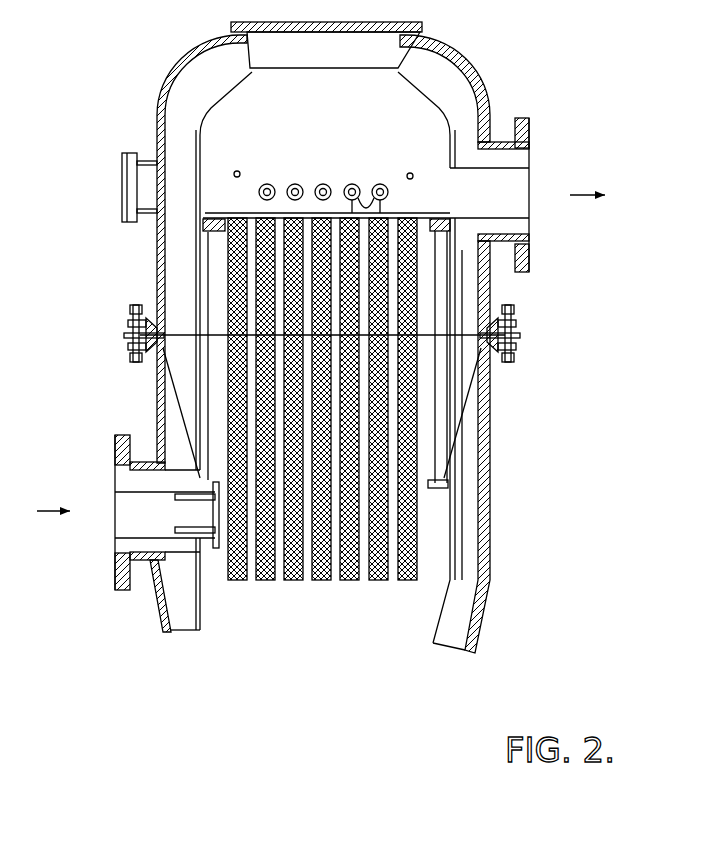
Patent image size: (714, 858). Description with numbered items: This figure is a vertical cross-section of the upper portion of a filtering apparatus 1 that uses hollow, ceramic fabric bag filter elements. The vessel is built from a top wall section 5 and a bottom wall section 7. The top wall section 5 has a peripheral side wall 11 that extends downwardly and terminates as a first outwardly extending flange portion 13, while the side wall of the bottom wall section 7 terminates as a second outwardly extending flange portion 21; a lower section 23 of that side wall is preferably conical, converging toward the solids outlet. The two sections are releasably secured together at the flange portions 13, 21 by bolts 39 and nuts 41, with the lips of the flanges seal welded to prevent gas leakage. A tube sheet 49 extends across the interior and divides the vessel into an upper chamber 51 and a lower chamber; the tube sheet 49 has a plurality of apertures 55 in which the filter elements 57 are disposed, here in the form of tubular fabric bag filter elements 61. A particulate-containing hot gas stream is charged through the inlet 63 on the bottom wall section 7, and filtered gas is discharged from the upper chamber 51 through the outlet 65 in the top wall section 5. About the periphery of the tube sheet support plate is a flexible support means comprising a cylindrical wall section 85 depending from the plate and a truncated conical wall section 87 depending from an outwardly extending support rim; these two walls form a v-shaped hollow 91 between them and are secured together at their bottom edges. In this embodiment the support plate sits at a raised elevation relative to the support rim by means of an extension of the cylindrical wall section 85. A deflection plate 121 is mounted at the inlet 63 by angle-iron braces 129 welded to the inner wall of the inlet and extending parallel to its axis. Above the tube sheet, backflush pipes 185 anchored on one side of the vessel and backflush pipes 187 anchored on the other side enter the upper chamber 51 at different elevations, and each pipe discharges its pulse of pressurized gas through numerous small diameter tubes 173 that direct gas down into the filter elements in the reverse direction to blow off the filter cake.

The filtering apparatus 1 is at (481, 44).
The top wall section 5 is at (128, 115).
The bottom wall section 7 is at (98, 420).
The peripheral side wall 11 is at (178, 65).
The first outwardly extending flange portion 13 is at (130, 320).
The second outwardly extending flange portion 21 is at (128, 346).
The lower section of peripheral side wall 23 is at (108, 626).
The bolts 39 is at (130, 334).
The nuts 41 is at (130, 360).
The tube sheet 49 is at (206, 213).
The upper chamber 51 is at (277, 115).
The apertures 55 is at (218, 232).
The filter elements 57 is at (422, 508).
The tubular fabric bag filter elements 61 is at (397, 582).
The inlet 63 is at (88, 488).
The outlet 65 is at (556, 176).
The cylindrical wall section 85 is at (452, 460).
The truncated conical wall section 87 is at (483, 476).
The v-shaped hollow 91 is at (481, 390).
The deflection plate 121 is at (204, 515).
The angle-iron braces 129 is at (175, 497).
The small diameter tubes 173 is at (367, 196).
The backflush pipes 185 is at (295, 183).
The backflush pipes 187 is at (239, 171).